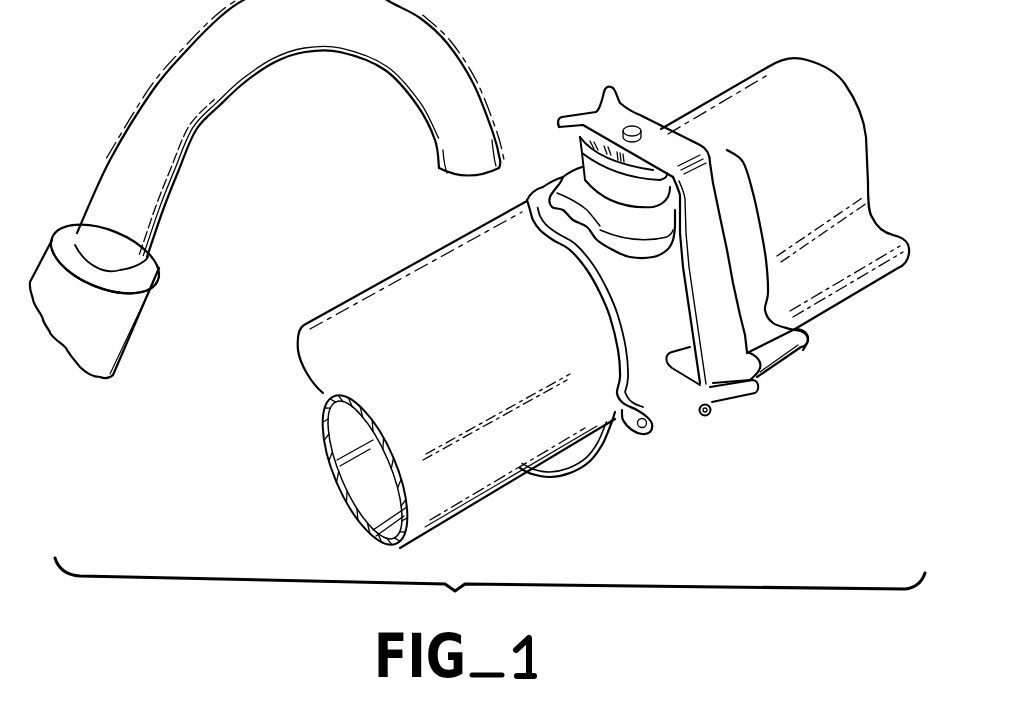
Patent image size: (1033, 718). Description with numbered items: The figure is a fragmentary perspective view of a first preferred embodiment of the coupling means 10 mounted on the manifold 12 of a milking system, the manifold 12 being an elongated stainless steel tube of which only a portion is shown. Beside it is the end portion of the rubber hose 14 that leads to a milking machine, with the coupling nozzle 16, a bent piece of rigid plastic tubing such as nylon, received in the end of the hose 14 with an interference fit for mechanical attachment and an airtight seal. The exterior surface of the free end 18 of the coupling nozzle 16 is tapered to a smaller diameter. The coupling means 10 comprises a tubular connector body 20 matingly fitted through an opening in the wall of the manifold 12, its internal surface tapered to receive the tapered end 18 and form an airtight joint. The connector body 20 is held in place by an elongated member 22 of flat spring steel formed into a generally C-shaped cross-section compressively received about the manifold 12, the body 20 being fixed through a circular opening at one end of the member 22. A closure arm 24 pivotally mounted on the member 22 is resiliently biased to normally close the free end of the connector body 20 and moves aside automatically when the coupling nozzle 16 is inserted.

The coupling means 10 is at (800, 369).
The manifold 12 is at (799, 168).
The hose 14 is at (117, 328).
The coupling nozzle 16 is at (192, 128).
The free end of the coupling nozzle 18 is at (441, 120).
The tubular connector body 20 is at (598, 187).
The elongated member 22 is at (632, 305).
The closure arm 24 is at (718, 265).